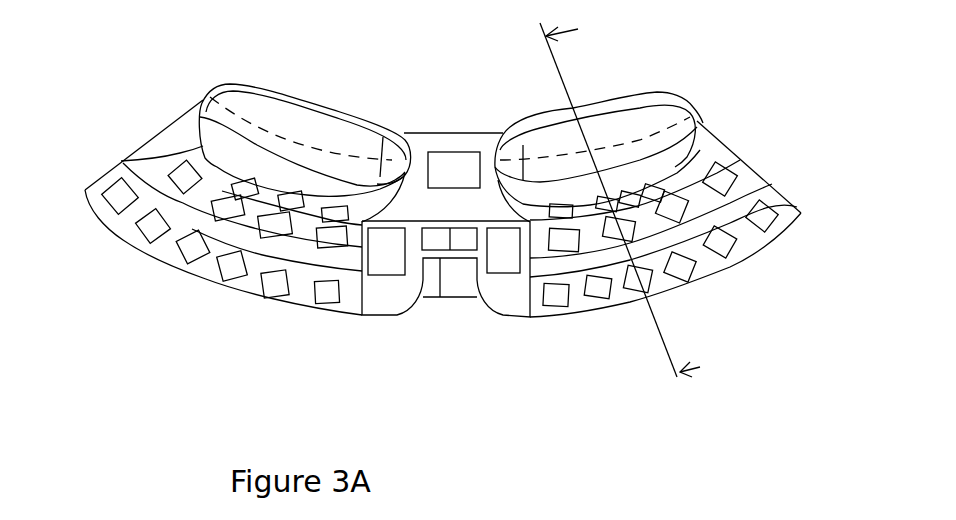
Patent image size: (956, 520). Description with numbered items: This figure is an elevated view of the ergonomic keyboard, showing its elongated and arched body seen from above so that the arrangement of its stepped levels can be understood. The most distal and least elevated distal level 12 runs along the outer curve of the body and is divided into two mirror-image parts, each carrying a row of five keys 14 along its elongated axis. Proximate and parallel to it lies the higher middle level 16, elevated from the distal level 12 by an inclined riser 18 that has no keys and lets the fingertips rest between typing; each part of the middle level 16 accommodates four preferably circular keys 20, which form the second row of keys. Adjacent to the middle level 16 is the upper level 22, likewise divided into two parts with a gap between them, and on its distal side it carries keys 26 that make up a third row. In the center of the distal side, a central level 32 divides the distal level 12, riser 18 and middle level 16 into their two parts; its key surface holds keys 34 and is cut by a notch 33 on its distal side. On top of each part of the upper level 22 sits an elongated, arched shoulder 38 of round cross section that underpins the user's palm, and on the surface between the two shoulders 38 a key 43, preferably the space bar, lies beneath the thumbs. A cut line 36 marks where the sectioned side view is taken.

The distal level 12 is at (773, 193).
The keys 14 is at (722, 242).
The middle level 16 is at (730, 152).
The riser 18 is at (757, 177).
The keys 20 is at (670, 197).
The upper level 22 is at (121, 161).
The keys 26 is at (265, 178).
The central level 32 is at (387, 297).
The notch 33 is at (460, 287).
The keys 34 is at (440, 240).
The cut line 36 is at (663, 347).
The shoulder 38 is at (305, 132).
The key 43 is at (447, 163).